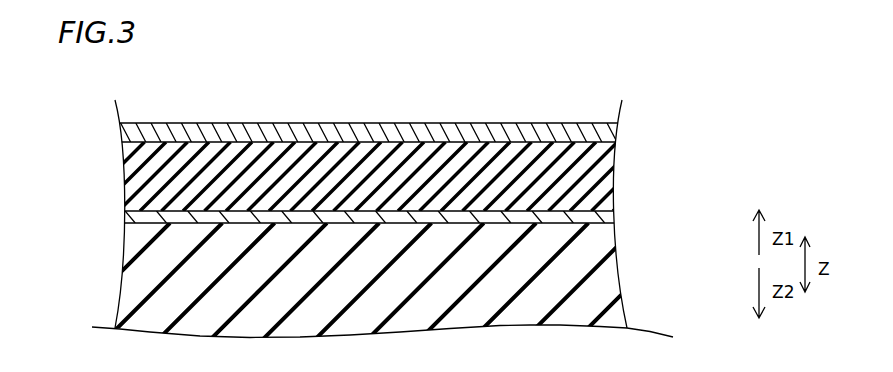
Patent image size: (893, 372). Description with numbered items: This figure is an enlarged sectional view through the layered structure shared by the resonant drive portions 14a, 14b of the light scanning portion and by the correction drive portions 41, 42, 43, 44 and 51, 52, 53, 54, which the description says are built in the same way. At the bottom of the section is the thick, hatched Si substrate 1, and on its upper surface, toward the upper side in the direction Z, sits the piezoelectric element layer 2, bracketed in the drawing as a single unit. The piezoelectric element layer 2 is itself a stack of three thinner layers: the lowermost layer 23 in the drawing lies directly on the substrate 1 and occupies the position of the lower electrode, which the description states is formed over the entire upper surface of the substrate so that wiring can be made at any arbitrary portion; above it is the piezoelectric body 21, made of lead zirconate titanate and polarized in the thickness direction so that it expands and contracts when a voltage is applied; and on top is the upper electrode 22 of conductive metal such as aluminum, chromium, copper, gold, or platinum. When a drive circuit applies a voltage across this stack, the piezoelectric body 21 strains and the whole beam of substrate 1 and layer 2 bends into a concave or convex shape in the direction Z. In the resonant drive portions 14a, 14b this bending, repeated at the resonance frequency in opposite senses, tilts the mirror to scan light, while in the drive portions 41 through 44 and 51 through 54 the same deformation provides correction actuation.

The Si substrate 1 is at (597, 272).
The piezoelectric element layer 2 is at (397, 178).
The piezoelectric body 21 is at (602, 177).
The upper electrode 22 is at (605, 135).
The lower layer 23 is at (400, 222).
The resonant drive portion 14a is at (437, 187).
The resonant drive portion 14b is at (437, 187).
The drive portion 41 is at (437, 187).
The drive portion 42 is at (437, 187).
The drive portion 43 is at (437, 187).
The drive portion 44 is at (437, 187).
The drive portion 51 is at (437, 187).
The drive portion 52 is at (437, 187).
The drive portion 53 is at (437, 187).
The drive portion 54 is at (548, 105).